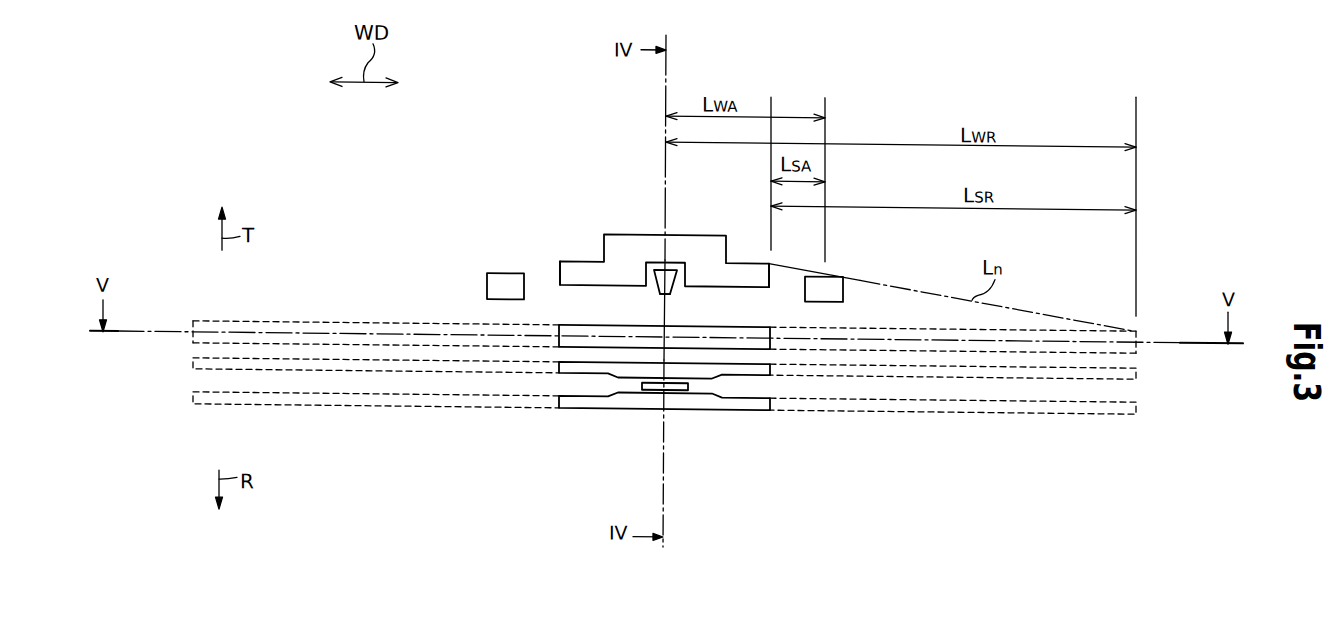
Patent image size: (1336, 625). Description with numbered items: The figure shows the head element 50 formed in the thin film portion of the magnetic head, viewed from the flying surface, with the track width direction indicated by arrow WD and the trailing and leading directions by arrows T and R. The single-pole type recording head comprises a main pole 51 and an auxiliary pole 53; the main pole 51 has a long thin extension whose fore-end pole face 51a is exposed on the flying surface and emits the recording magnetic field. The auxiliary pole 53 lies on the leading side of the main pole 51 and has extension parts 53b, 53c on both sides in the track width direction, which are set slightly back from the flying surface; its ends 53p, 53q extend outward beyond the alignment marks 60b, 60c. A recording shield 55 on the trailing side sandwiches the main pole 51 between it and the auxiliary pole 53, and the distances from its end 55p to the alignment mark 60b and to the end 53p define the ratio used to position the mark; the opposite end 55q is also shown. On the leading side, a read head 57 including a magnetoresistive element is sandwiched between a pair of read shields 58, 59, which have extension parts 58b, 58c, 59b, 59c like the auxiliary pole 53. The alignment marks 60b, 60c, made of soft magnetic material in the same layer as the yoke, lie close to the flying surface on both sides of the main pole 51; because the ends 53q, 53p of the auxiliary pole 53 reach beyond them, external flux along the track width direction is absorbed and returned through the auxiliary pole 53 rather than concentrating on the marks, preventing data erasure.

The head element 50 is at (549, 166).
The main pole 51 is at (659, 291).
The pole face 51a is at (672, 289).
The auxiliary pole 53 is at (588, 326).
The extension part 53b is at (935, 326).
The extension part 53c is at (283, 325).
The end of auxiliary pole 53p is at (1139, 326).
The end of auxiliary pole 53q is at (193, 326).
The recording shield 55 is at (631, 236).
The end of recording shield 55p is at (771, 284).
The write shield front end 55q is at (559, 273).
The read head 57 is at (688, 388).
The read shield 58 is at (587, 371).
The extension part 58b is at (1130, 376).
The extension part 58c is at (205, 373).
The read shield 59 is at (752, 406).
The extension part 59b is at (1130, 408).
The extension part 59c is at (205, 408).
The alignment mark 60b is at (833, 288).
The alignment mark 60c is at (497, 285).